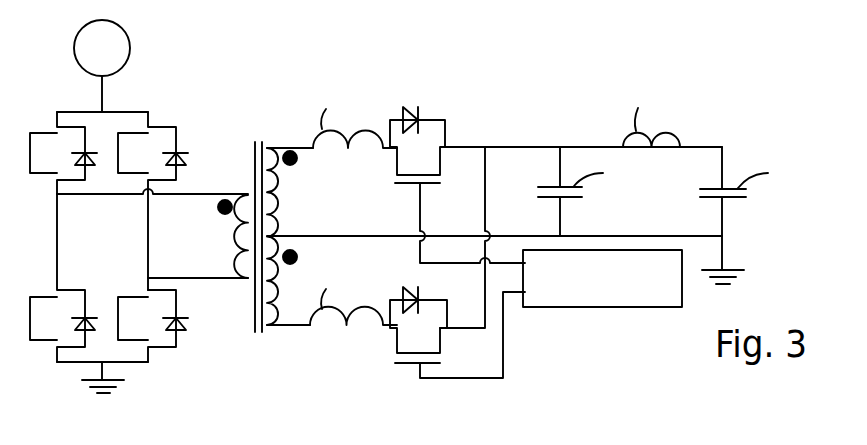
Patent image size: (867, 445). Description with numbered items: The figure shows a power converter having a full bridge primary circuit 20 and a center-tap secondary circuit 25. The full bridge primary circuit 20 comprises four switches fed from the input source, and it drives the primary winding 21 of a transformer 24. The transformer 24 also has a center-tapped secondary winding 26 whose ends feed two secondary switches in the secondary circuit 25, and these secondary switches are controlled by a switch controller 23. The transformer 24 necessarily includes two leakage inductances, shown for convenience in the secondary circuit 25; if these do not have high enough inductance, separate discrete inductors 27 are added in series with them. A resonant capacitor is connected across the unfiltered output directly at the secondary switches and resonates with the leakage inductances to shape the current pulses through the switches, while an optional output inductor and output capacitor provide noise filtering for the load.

The full bridge primary circuit 20 is at (160, 67).
The primary winding 21 is at (236, 248).
The switch controller 23 is at (602, 278).
The transformer 24 is at (253, 172).
The center-tap secondary circuit 25 is at (347, 66).
The center-tapped secondary winding 26 is at (286, 232).
The discrete inductors 27 is at (363, 129).